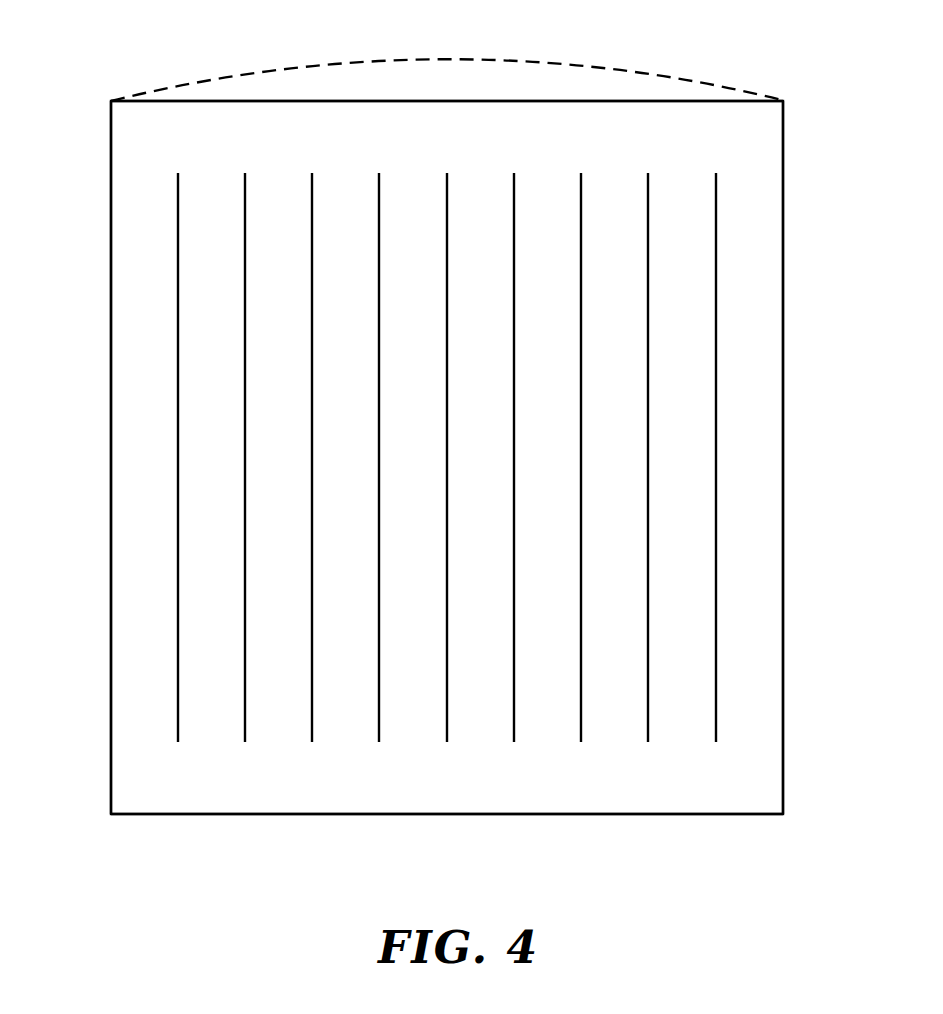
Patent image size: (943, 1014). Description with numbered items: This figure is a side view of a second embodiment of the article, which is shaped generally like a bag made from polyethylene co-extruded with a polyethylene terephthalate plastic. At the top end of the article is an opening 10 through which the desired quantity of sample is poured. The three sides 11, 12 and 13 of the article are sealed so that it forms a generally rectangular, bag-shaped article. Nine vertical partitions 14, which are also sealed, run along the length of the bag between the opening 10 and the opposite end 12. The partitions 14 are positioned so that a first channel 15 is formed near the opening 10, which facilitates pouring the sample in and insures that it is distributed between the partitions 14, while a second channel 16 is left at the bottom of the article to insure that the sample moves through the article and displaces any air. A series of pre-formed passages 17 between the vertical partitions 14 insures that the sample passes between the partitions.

The opening 10 is at (527, 82).
The side 11 is at (113, 648).
The side (opposite end) 12 is at (145, 815).
The side 13 is at (785, 588).
The vertical partitions 14 is at (649, 405).
The first channel 15 is at (685, 146).
The second channel 16 is at (570, 768).
The pre-formed passages 17 is at (132, 289).